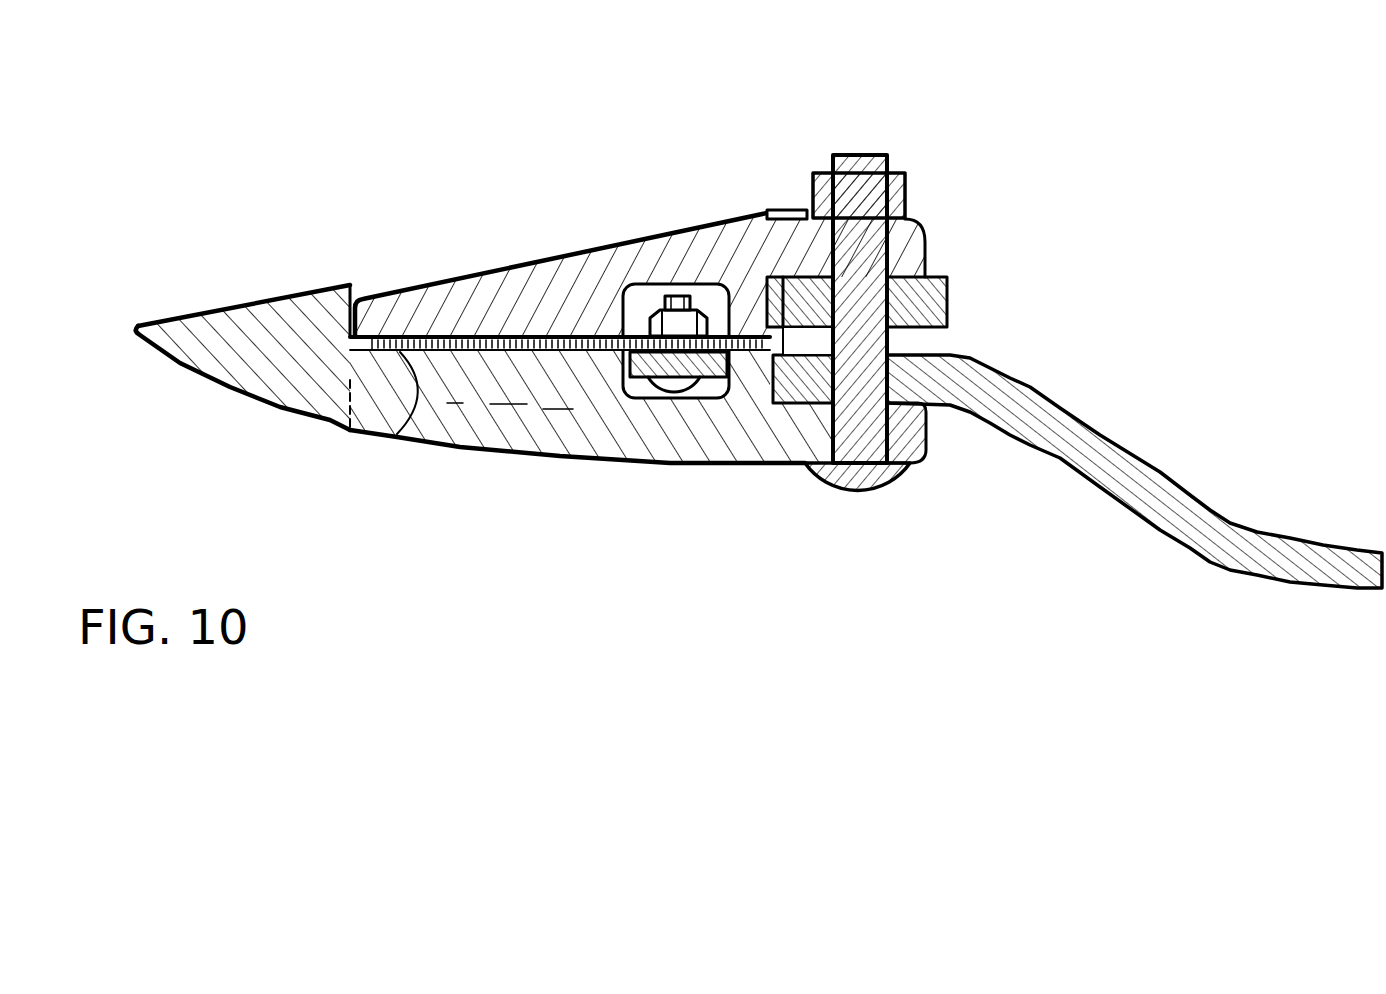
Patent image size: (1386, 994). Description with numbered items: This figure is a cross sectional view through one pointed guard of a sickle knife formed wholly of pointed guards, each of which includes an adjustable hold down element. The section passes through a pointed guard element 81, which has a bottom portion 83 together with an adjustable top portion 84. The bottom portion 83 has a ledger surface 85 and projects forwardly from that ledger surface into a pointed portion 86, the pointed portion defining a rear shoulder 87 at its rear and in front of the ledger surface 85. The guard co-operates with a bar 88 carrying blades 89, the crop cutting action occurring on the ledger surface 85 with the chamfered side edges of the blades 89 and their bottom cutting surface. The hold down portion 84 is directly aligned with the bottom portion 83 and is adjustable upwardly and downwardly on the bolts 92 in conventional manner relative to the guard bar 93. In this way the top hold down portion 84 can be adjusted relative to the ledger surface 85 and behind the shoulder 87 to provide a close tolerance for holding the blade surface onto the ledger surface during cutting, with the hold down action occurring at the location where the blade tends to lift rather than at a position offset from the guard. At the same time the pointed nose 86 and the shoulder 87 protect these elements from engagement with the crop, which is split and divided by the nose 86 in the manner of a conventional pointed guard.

The pointed guard element 81 is at (465, 228).
The bottom portion 83 is at (508, 446).
The adjustable top portion 84 is at (565, 298).
The ledger surface 85 is at (418, 406).
The pointed portion 86 is at (245, 333).
The rear shoulder 87 is at (357, 333).
The bar 88 is at (718, 405).
The blades 89 is at (600, 393).
The bolts 92 is at (863, 152).
The guard bar 93 is at (984, 362).